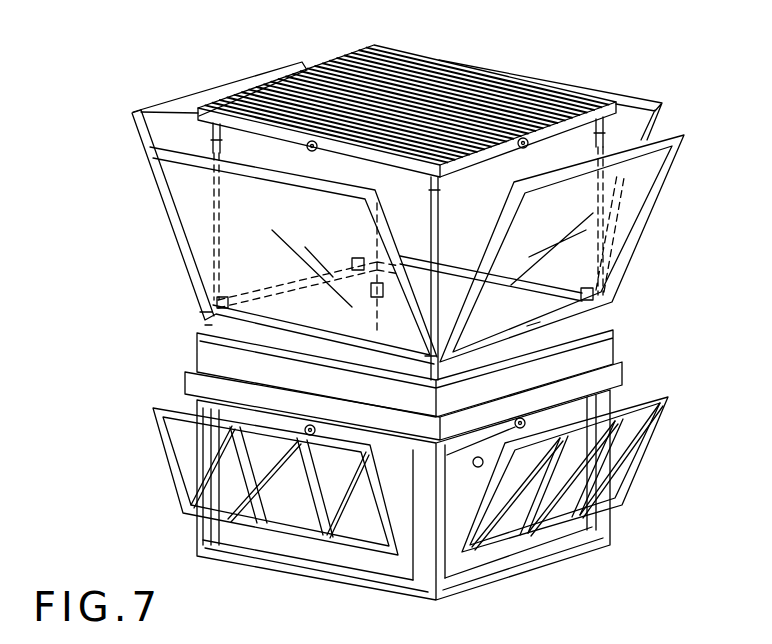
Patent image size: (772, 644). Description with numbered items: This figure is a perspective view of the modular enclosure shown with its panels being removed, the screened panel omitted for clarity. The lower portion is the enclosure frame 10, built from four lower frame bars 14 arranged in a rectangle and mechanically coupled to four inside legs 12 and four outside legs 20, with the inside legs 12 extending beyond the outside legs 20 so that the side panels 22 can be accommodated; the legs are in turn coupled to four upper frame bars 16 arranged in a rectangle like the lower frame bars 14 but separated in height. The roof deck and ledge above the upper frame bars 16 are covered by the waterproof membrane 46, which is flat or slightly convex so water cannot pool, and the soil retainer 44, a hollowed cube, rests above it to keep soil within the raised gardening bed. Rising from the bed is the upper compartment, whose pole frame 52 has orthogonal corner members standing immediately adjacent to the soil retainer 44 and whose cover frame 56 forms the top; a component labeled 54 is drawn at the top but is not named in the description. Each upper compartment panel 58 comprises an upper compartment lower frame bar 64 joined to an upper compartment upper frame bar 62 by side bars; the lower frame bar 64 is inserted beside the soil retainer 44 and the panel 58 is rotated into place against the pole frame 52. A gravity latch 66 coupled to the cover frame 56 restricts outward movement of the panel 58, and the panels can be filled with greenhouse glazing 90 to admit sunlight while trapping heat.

The enclosure frame 10 is at (195, 400).
The inside legs 12 is at (210, 476).
The lower frame bars 14 is at (548, 556).
The upper frame bars 16 is at (303, 425).
The outside legs 20 is at (200, 443).
The side panels 22 is at (177, 508).
The soil retainer 44 is at (198, 338).
The waterproof membrane 46 is at (447, 368).
The pole frame 52 is at (222, 247).
The grid top 54 is at (345, 66).
The cover frame 56 is at (233, 125).
The upper compartment panel 58 is at (131, 128).
The upper compartment upper frame bar 62 is at (160, 110).
The upper compartment lower frame bar 64 is at (200, 312).
The gravity latch 66 is at (311, 164).
The greenhouse glazing 90 is at (615, 180).